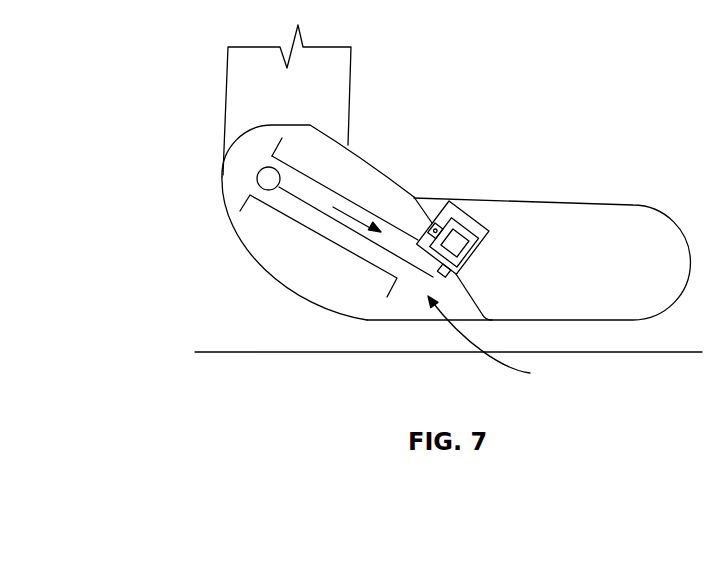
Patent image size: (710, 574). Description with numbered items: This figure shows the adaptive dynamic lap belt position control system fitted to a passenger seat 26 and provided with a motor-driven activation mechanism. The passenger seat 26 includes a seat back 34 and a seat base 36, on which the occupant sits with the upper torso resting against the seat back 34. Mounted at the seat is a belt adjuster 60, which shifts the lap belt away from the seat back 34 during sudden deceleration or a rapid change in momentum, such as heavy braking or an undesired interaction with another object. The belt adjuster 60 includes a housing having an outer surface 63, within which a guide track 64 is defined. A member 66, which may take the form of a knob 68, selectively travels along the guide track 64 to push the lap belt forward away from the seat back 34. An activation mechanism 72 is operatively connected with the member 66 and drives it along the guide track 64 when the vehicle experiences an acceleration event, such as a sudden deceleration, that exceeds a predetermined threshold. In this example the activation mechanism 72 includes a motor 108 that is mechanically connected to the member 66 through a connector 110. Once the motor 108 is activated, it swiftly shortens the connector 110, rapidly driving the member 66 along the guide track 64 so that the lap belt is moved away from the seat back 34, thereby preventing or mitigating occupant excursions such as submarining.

The passenger seat 26 is at (201, 46).
The seat back 34 is at (237, 93).
The seat base 36 is at (642, 302).
The belt adjuster 60 is at (221, 184).
The outer surface 63 is at (366, 302).
The guide track 64 is at (353, 256).
The member 66 is at (257, 174).
The knob 68 is at (274, 157).
The activation mechanism 72 is at (530, 373).
The motor 108 is at (463, 240).
The connector 110 is at (358, 230).